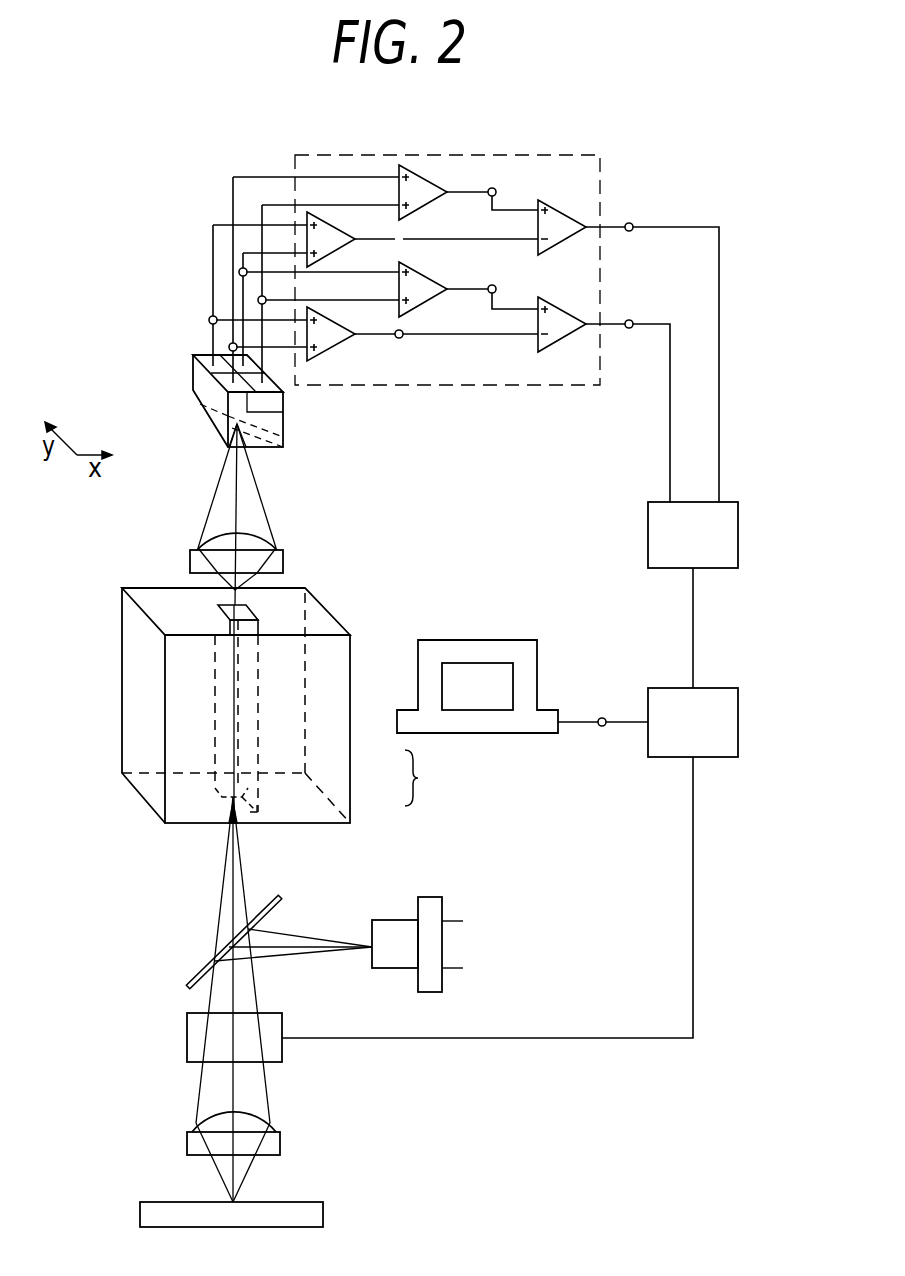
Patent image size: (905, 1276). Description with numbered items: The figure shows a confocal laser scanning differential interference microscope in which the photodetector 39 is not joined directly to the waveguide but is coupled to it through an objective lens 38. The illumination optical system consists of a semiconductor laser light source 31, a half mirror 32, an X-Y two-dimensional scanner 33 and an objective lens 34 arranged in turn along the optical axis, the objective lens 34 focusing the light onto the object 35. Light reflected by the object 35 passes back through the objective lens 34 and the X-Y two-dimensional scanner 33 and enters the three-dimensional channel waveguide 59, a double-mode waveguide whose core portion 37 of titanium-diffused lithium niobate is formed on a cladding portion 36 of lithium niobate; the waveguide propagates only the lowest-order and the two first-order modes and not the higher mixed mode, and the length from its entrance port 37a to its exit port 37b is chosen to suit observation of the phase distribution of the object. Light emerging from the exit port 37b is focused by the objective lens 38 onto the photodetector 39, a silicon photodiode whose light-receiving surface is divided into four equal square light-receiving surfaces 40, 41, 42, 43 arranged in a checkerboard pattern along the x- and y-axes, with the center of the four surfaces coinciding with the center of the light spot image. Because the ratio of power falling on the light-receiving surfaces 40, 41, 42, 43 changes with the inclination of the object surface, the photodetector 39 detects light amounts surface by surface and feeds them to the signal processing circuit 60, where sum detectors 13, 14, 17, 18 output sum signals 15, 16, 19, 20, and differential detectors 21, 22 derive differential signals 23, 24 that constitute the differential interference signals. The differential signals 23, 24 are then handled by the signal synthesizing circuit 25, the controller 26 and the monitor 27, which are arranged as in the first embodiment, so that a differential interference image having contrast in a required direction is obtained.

The sum detector 13 is at (323, 214).
The sum detector 14 is at (330, 348).
The sum signal 15 is at (373, 238).
The sum signal 16 is at (385, 334).
The sum detector 17 is at (412, 167).
The sum detector 18 is at (427, 317).
The sum signal 19 is at (466, 190).
The sum signal 20 is at (469, 290).
The differential detector 21 is at (547, 199).
The differential detector 22 is at (547, 352).
The differential signal 23 is at (600, 199).
The differential signal 24 is at (601, 323).
The signal synthesizing circuit 25 is at (648, 547).
The controller 26 is at (655, 688).
The monitor 27 is at (478, 640).
The semiconductor laser light source 31 is at (383, 920).
The half mirror 32 is at (262, 912).
The X-Y two-dimensional scanner 33 is at (187, 1040).
The objective lens 34 is at (280, 1143).
The object 35 is at (323, 1213).
The cladding portion 36 is at (333, 783).
The core portion 37 is at (253, 740).
The entrance port 37a is at (225, 800).
The exit port 37b is at (216, 604).
The objective lens 38 is at (283, 560).
The photodetector 39 is at (200, 382).
The light-receiving surface 40 is at (197, 407).
The light-receiving surface 41 is at (217, 437).
The light-receiving surface 42 is at (248, 413).
The light-receiving surface 43 is at (272, 447).
The three-dimensional channel waveguide 59 is at (283, 705).
The signal processing circuit 60 is at (563, 155).